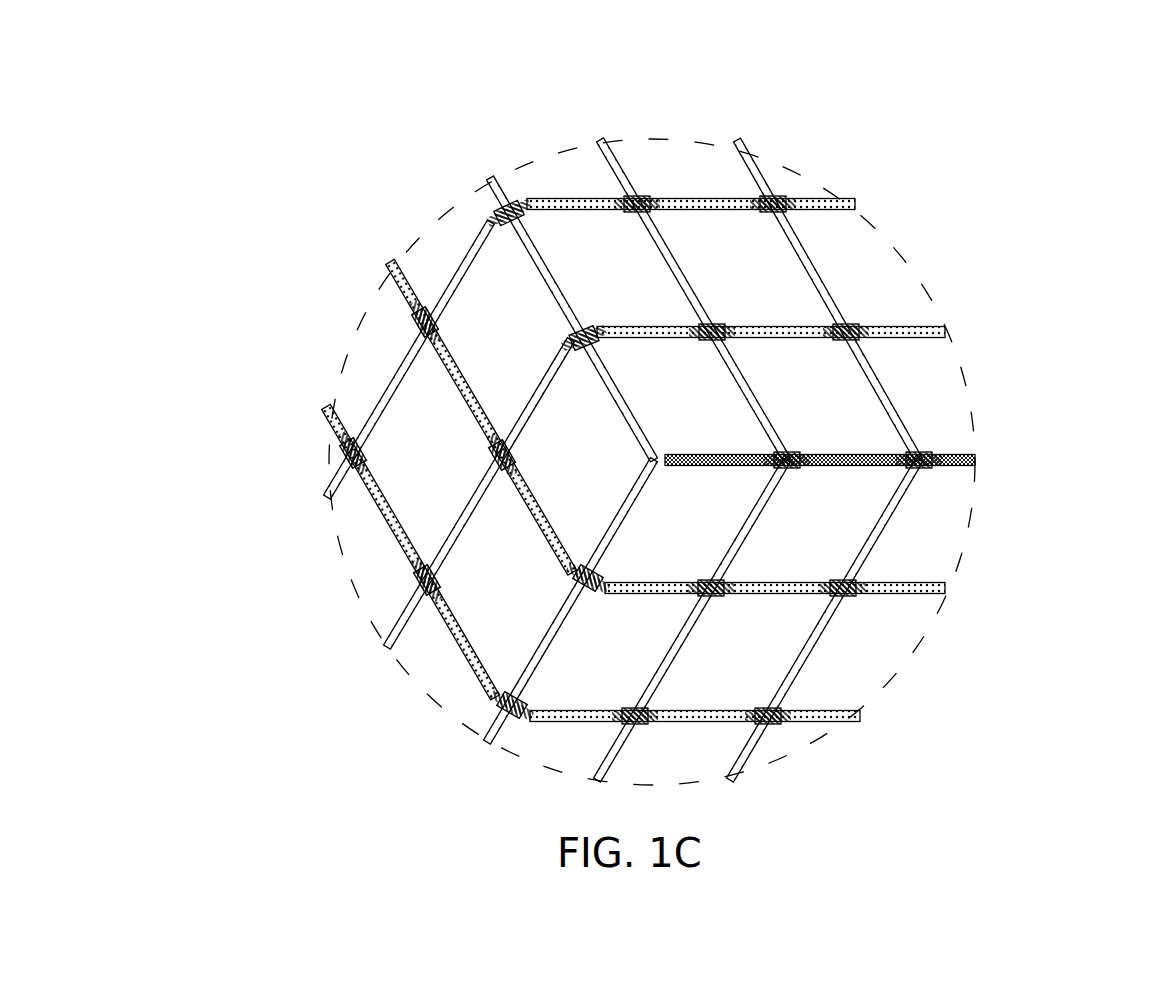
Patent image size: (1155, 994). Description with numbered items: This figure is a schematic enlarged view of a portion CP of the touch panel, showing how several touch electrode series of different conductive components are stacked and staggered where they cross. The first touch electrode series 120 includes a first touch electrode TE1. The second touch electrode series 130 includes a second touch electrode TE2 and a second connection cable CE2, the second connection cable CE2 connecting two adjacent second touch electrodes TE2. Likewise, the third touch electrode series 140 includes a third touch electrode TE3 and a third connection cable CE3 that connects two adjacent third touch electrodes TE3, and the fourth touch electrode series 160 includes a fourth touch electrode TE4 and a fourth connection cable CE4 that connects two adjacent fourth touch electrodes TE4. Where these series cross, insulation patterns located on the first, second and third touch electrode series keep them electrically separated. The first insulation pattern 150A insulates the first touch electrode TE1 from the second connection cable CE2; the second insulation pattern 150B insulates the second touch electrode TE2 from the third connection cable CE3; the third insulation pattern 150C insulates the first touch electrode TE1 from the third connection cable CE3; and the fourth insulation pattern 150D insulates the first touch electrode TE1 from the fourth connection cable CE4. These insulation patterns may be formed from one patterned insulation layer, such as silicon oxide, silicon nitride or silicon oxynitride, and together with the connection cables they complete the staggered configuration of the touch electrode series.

The portion CP is at (145, 104).
The first touch electrode series 120 is at (763, 270).
The first touch electrode TE1 is at (805, 250).
The second touch electrode series 130 is at (410, 409).
The second connection cable CE2 is at (530, 198).
The second touch electrode TE2 is at (480, 246).
The third touch electrode series 140 is at (655, 650).
The third connection cable CE3 is at (530, 717).
The third touch electrode TE3 is at (570, 722).
The fourth touch electrode series 160 is at (899, 406).
The fourth touch electrode TE4 is at (847, 453).
The fourth connection cable CE4 is at (908, 447).
The first insulation pattern 150A is at (641, 197).
The second insulation pattern 150B is at (412, 588).
The third insulation pattern 150C is at (856, 598).
The fourth insulation pattern 150D is at (930, 450).